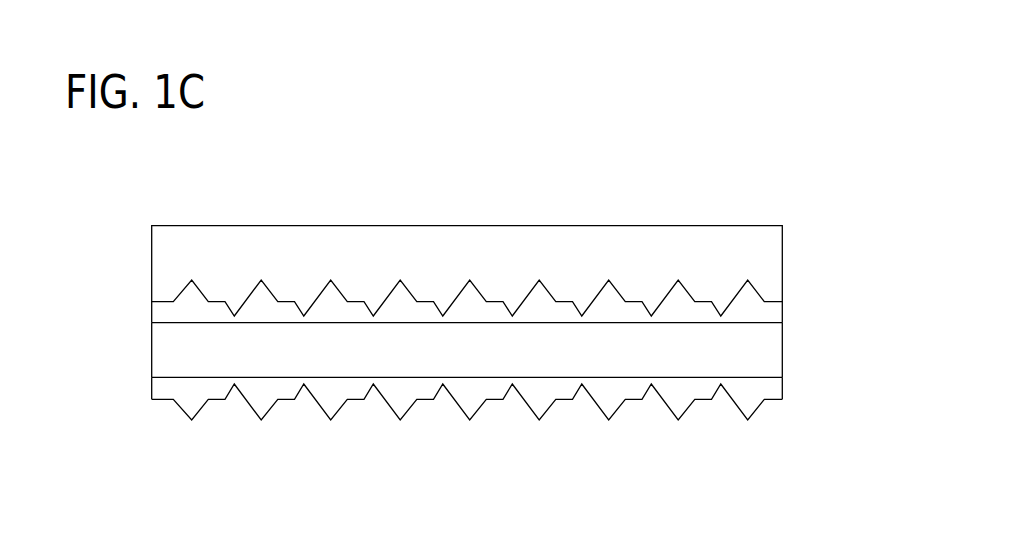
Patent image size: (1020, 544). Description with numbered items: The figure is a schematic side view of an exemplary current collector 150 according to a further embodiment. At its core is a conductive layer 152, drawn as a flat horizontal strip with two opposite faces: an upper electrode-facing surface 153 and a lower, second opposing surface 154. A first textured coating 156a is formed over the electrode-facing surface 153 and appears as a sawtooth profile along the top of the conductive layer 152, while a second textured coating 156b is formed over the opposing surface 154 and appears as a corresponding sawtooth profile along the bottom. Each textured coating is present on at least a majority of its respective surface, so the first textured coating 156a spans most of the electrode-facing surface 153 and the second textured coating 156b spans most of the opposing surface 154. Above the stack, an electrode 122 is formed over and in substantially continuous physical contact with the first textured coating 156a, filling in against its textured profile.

The current collector 150 is at (732, 131).
The electrode 122 is at (400, 245).
The conductive layer 152 is at (398, 357).
The electrode-facing surface 153 is at (769, 322).
The opposing surface 154 is at (753, 378).
The first textured coating 156a is at (168, 313).
The second textured coating 156b is at (168, 387).